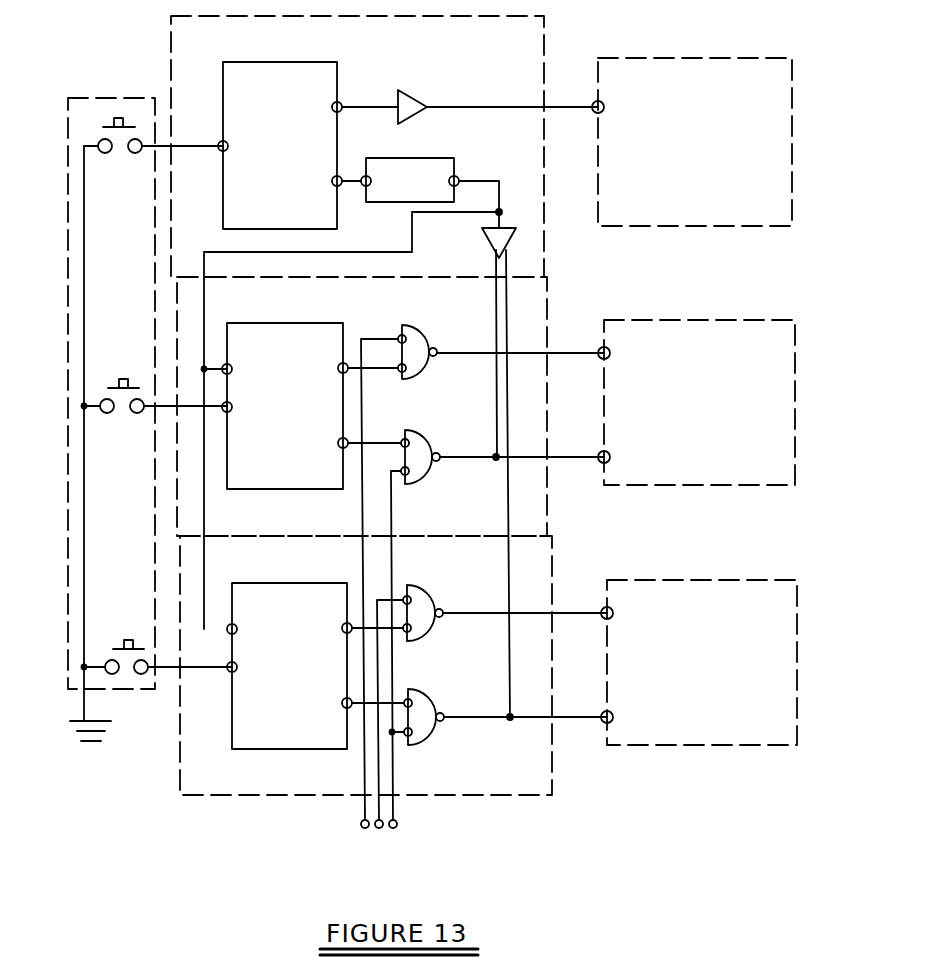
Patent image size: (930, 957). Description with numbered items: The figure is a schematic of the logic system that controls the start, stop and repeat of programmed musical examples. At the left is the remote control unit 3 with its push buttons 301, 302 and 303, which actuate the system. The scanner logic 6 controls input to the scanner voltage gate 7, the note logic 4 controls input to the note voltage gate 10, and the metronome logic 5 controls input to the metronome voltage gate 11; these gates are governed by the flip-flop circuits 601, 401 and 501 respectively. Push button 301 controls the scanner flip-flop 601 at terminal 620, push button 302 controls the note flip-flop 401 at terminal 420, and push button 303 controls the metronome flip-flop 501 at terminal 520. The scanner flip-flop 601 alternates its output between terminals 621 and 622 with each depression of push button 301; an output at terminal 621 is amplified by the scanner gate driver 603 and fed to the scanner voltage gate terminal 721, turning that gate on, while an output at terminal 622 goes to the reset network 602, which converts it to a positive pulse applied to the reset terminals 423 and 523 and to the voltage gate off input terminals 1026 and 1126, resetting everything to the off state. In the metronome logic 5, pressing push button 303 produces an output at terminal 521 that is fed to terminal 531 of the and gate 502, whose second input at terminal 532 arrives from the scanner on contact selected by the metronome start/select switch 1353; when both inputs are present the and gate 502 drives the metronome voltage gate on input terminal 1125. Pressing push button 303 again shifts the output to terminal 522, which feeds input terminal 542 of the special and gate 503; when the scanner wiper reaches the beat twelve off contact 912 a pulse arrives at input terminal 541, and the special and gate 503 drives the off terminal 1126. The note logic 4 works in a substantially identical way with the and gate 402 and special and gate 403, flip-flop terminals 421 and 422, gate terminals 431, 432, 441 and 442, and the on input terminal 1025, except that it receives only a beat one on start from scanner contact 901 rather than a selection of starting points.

The remote control unit 3 is at (68, 481).
The push button 301 is at (119, 118).
The push button 302 is at (129, 353).
The push button 303 is at (129, 640).
The note logic 4 is at (547, 412).
The metronome logic 5 is at (553, 678).
The scanner logic 6 is at (545, 208).
The scanner voltage gate 7 is at (655, 226).
The note voltage gate 10 is at (690, 485).
The metronome voltage gate 11 is at (676, 745).
The note flip-flop 401 is at (294, 418).
The and gate 402 is at (416, 327).
The special and gate 403 is at (420, 430).
The terminal 420 is at (231, 403).
The terminal 421 is at (344, 363).
The terminal 422 is at (340, 447).
The reset terminal 423 is at (225, 364).
The terminal 431 is at (398, 371).
The terminal 432 is at (398, 336).
The input terminal 441 is at (402, 475).
The input terminal 442 is at (401, 440).
The metronome flip-flop 501 is at (302, 673).
The and gate 502 is at (420, 590).
The special and gate 503 is at (422, 702).
The terminal 520 is at (236, 663).
The terminal 521 is at (348, 623).
The terminal 522 is at (344, 708).
The reset terminal 523 is at (230, 624).
The terminal 531 is at (405, 632).
The terminal 532 is at (403, 598).
The input terminal 541 is at (406, 736).
The input terminal 542 is at (405, 700).
The scanner flip-flop 601 is at (290, 160).
The reset network 602 is at (432, 158).
The scanner gate driver 603 is at (412, 90).
The terminal 620 is at (226, 141).
The terminal 621 is at (340, 102).
The terminal 622 is at (332, 184).
The scanner voltage gate terminal 721 is at (597, 101).
The note voltage gate on input terminal 1025 is at (603, 347).
The note voltage gate off input terminal 1026 is at (602, 463).
The metronome voltage gate on input terminal 1125 is at (605, 607).
The metronome voltage gate off terminal 1126 is at (605, 723).
The scanner contact 901 is at (365, 828).
The metronome start/select switch 1353 is at (379, 828).
The scanner beat twelve off contact 912 is at (393, 828).